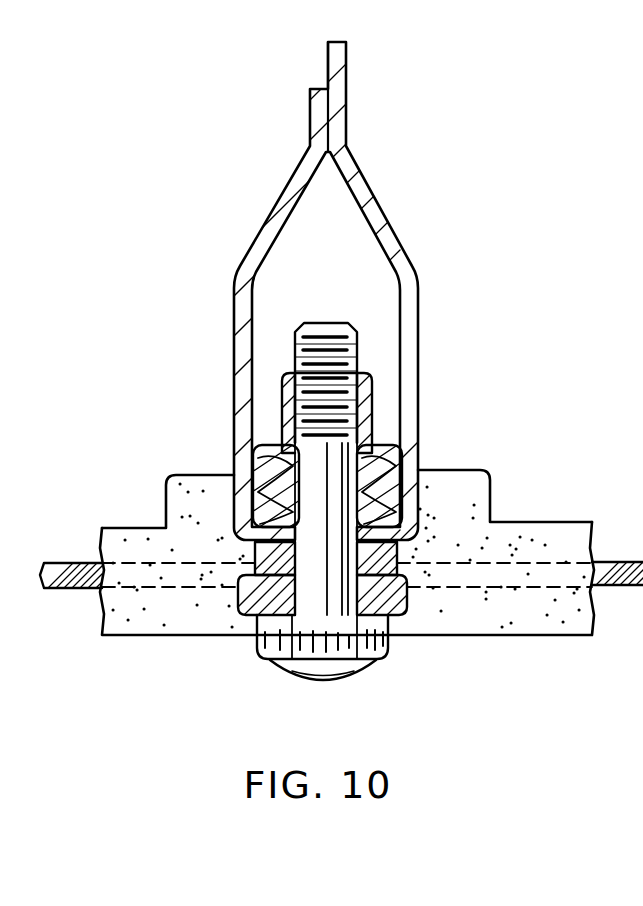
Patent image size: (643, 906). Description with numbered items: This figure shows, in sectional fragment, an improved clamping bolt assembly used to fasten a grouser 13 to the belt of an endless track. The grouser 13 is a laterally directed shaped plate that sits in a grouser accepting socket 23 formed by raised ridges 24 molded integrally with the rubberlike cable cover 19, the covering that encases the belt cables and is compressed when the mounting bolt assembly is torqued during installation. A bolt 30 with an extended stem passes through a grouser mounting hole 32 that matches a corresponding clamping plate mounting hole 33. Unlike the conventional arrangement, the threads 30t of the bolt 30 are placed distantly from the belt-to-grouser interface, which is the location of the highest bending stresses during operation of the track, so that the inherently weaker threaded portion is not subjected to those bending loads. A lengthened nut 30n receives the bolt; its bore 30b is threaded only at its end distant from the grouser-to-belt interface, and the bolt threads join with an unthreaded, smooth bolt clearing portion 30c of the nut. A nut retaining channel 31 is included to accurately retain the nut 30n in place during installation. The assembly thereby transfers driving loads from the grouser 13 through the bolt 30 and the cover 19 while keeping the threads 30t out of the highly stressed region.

The grouser 13 is at (270, 212).
The cable cover 19 is at (528, 622).
The grouser accepting socket 23 is at (420, 457).
The raised ridge 24 is at (193, 486).
The bolt 30 is at (376, 658).
The threads 30t is at (362, 338).
The lengthened nut 30n is at (370, 387).
The bore 30b is at (254, 416).
The bolt clearing portion 30c is at (235, 453).
The nut retaining channel 31 is at (397, 440).
The grouser mounting hole 32 is at (250, 556).
The clamping plate mounting hole 33 is at (302, 600).